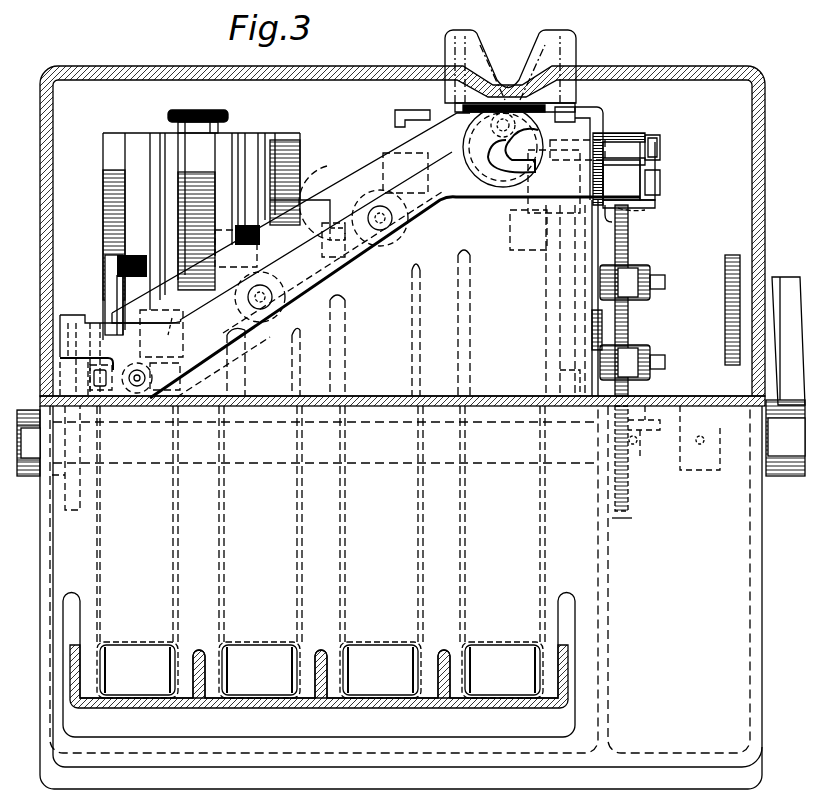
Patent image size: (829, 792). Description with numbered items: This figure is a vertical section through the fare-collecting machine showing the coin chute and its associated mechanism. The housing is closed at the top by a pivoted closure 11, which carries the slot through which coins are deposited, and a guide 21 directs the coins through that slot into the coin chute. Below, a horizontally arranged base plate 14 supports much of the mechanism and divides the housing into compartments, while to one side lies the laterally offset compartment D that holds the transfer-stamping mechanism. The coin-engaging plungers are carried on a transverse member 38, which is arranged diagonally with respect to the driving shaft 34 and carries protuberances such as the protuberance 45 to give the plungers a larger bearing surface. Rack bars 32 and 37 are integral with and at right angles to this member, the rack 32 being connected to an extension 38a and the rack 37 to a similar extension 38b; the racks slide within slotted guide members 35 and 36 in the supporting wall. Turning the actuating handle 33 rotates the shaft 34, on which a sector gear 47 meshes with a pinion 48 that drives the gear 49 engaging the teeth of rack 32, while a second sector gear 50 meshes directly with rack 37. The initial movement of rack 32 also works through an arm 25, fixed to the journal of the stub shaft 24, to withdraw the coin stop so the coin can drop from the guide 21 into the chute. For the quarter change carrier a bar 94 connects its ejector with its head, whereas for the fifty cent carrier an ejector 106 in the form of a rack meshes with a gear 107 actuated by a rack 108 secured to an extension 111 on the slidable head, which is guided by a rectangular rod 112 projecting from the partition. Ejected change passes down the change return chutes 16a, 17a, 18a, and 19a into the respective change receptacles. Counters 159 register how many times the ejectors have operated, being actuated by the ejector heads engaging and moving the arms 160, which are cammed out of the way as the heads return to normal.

The pivoted closure 11 is at (627, 72).
The horizontally arranged base plate 14 is at (366, 398).
The change return chute 16a is at (137, 670).
The change return chute 17a is at (259, 670).
The change return chute 18a is at (380, 670).
The change return chute 19a is at (502, 670).
The coin guide 21 is at (447, 42).
The stub shaft 24 is at (660, 142).
The arm 25 is at (650, 166).
The rack 32 is at (655, 205).
The actuating handle 33 is at (777, 276).
The driving shaft 34 is at (657, 470).
The slotted guide member 35 is at (612, 222).
The slotted guide member 36 is at (68, 318).
The rack bar 37 is at (62, 358).
The transverse member 38 is at (338, 212).
The extension 38a is at (607, 175).
The extension 38b is at (100, 330).
The protuberance 45 is at (330, 230).
The sector gear 47 is at (620, 525).
The pinion 48 is at (630, 352).
The gear 49 is at (630, 270).
The second sector gear 50 is at (50, 396).
The bar 94 is at (328, 322).
The ejector 106 is at (548, 376).
The gear 107 is at (575, 326).
The rack 108 is at (606, 136).
The extension 111 is at (565, 115).
The rectangular rod 112 is at (600, 112).
The counter 159 is at (238, 197).
The arm 160 is at (320, 165).
The compartment D is at (711, 307).